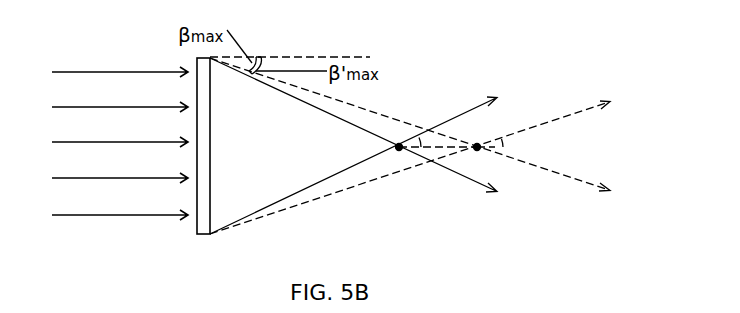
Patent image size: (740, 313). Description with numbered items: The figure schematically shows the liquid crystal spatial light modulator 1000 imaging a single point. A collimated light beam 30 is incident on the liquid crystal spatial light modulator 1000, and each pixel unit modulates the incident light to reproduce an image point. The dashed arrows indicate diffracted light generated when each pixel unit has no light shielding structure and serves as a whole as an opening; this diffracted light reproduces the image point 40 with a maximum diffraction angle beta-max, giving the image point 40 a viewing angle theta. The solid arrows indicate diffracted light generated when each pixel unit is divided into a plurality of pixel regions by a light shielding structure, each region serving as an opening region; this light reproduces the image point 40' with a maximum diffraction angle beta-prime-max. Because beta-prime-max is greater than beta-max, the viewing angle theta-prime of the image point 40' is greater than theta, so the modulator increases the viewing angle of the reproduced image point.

The collimated light beam 30 is at (93, 72).
The liquid crystal spatial light modulator 1000 is at (210, 148).
The image point 40 is at (410, 146).
The reproduced image point 40' is at (353, 146).